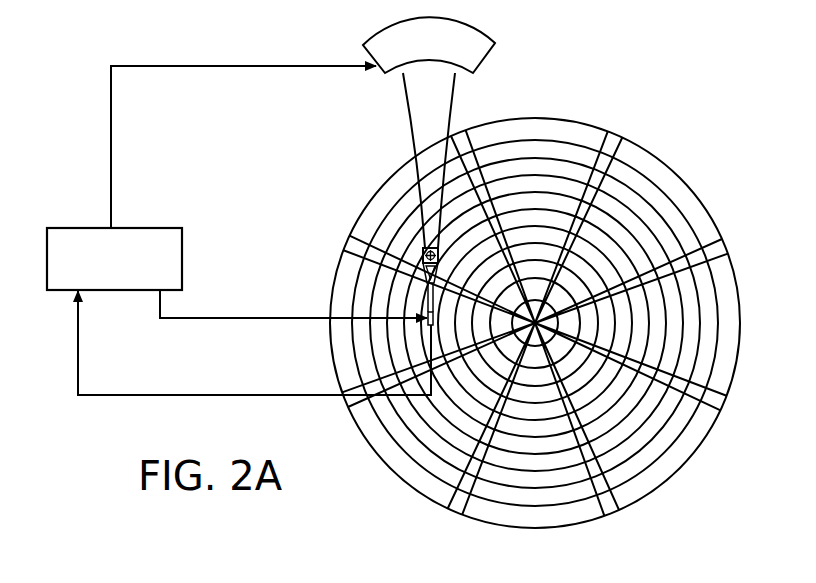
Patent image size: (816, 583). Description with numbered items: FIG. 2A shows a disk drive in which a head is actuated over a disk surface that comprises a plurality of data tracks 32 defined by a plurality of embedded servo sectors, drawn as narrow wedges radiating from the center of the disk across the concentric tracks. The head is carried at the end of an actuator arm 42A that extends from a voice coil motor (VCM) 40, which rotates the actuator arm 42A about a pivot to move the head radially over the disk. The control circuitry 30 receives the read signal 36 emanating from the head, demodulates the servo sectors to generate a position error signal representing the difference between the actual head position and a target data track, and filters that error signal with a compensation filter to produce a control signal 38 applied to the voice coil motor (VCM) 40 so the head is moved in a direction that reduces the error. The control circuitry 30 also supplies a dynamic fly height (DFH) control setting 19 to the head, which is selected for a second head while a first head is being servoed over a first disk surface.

The dynamic fly height (DFH) control setting 19 is at (257, 317).
The control circuitry 30 is at (150, 227).
The data tracks 32 is at (538, 145).
The read signal 36 is at (118, 394).
The control signal 38 is at (110, 134).
The voice coil motor (VCM) 40 is at (378, 76).
The actuator arm 42A is at (410, 144).